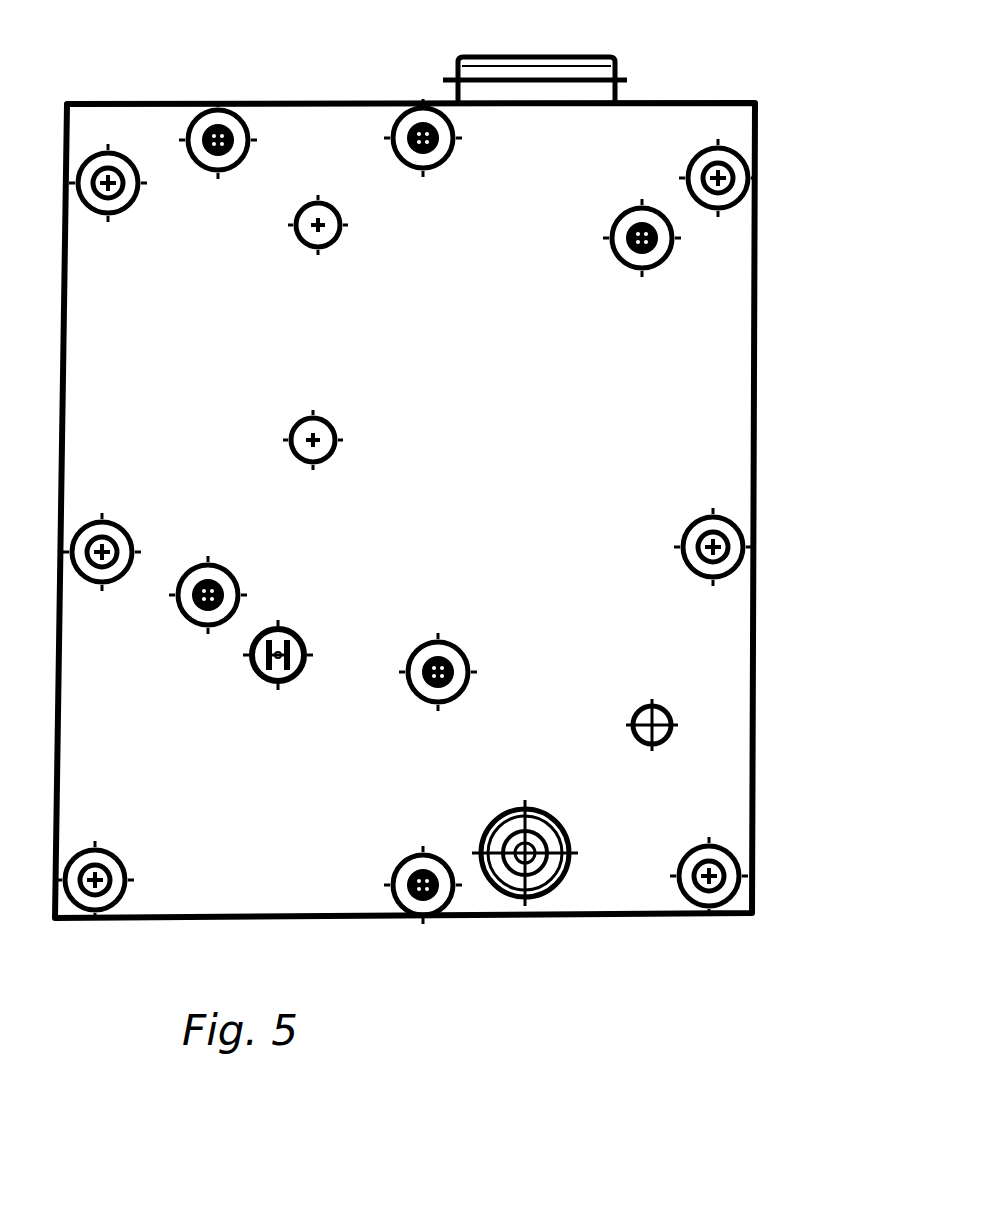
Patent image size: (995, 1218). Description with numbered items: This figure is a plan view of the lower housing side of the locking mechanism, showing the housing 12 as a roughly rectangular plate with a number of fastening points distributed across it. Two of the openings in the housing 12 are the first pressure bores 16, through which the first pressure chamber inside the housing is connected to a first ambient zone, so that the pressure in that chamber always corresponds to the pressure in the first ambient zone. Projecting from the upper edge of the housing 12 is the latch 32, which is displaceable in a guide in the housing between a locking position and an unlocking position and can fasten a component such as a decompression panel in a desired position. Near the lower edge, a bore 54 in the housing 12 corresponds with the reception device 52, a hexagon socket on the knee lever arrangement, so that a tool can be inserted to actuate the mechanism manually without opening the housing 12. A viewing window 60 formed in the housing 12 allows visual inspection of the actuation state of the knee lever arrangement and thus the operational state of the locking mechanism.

The housing 12 is at (725, 334).
The first pressure bores 16 is at (333, 232).
The latch 32 is at (592, 56).
The reception device 52 is at (532, 898).
The bore 54 is at (490, 897).
The viewing window 60 is at (633, 707).